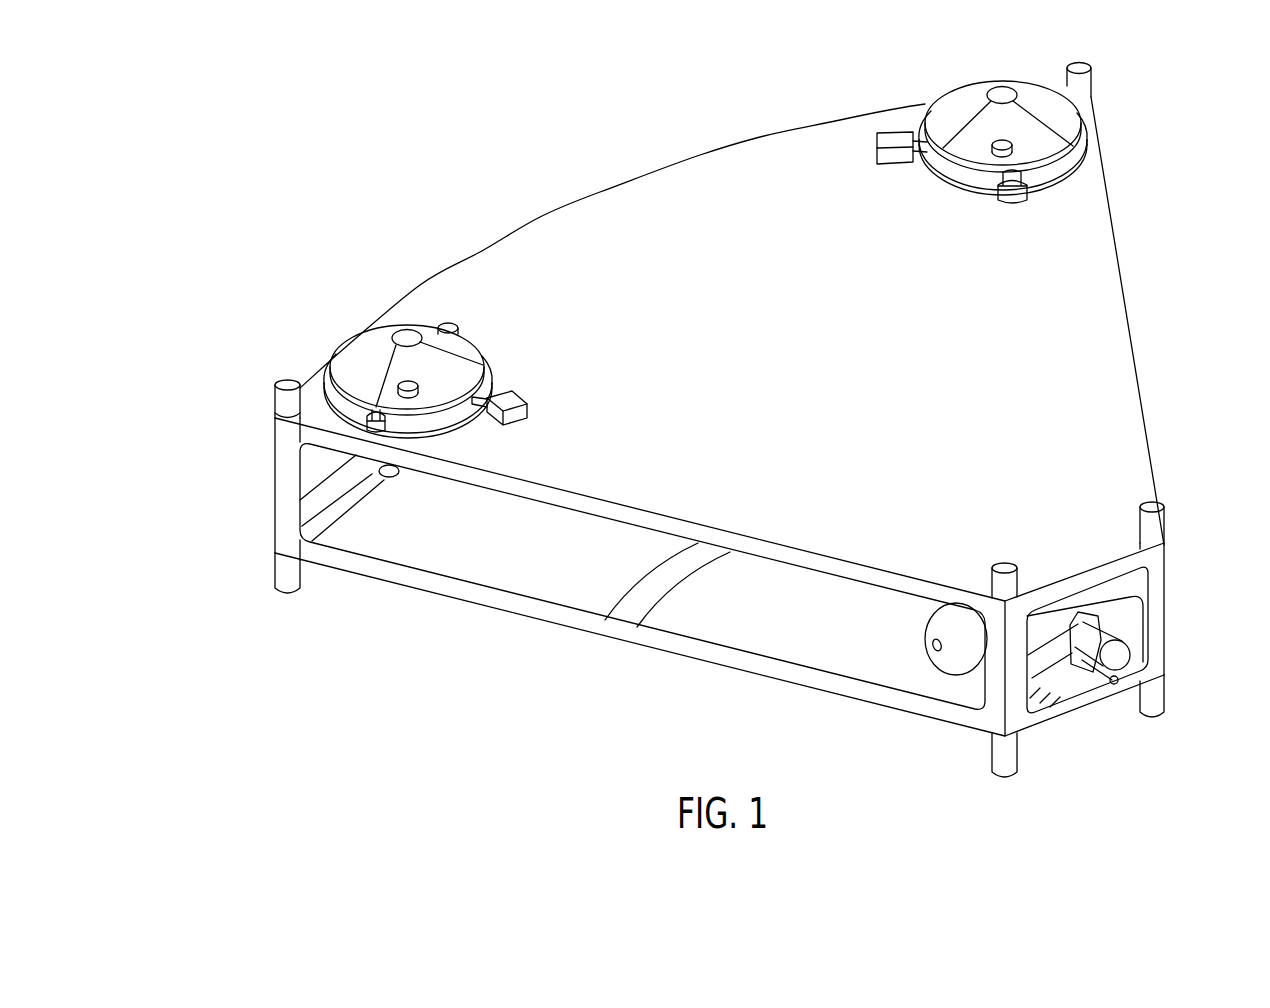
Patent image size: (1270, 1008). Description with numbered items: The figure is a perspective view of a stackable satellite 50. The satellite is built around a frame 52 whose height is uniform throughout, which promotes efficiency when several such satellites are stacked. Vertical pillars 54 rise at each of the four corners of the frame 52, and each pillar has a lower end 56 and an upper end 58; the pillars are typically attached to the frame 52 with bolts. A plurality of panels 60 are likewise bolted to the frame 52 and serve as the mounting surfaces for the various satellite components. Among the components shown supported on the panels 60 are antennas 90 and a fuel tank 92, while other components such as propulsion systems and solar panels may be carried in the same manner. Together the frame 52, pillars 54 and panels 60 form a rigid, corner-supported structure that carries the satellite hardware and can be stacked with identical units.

The stackable satellite 50 is at (497, 718).
The frame 52 is at (765, 683).
The vertical pillars 54 is at (1095, 82).
The lower end 56 is at (291, 600).
The upper end 58 is at (276, 388).
The panels 60 is at (541, 216).
The antennas 90 is at (353, 355).
The fuel tank 92 is at (932, 648).